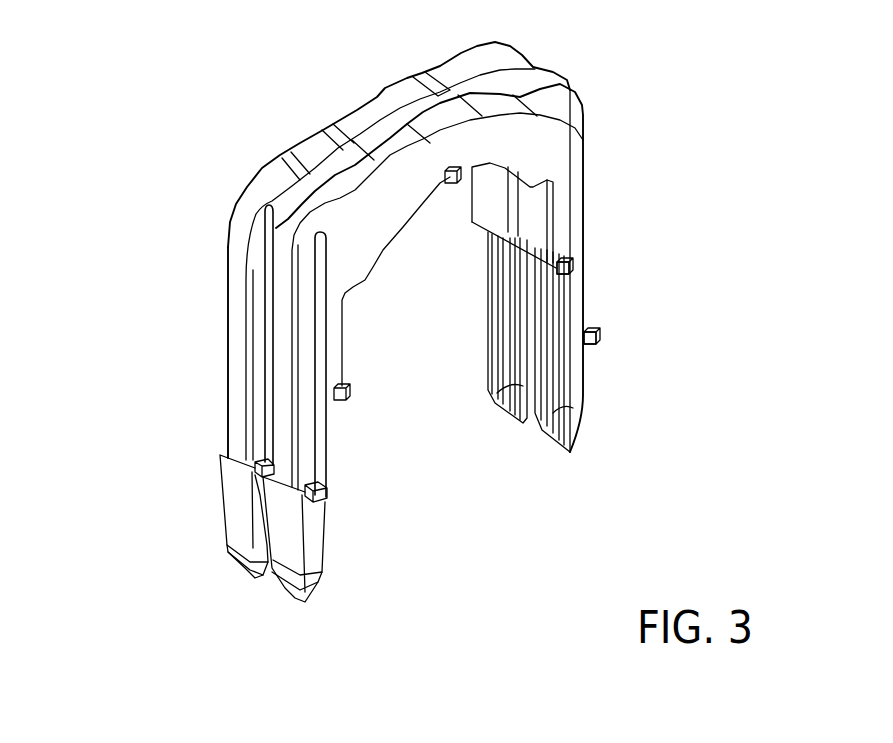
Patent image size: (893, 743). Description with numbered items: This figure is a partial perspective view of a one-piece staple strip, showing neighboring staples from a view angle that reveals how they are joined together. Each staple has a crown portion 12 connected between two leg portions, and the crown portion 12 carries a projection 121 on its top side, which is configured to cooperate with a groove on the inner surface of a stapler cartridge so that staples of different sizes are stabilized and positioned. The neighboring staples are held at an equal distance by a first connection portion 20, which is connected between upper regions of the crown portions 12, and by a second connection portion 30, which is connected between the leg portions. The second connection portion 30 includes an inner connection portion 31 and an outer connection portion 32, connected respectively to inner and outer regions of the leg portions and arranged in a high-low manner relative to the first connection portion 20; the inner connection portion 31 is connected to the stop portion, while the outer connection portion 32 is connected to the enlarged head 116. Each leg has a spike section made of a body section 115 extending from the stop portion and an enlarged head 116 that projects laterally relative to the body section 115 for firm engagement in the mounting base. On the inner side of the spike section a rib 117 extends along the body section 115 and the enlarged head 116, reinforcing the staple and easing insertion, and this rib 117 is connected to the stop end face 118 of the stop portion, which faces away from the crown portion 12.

The crown portion 12 is at (390, 54).
The projection 121 is at (370, 110).
The first connection portion 20 is at (458, 172).
The second connection portion 30 is at (714, 270).
The inner connection portion 31 is at (572, 268).
The outer connection portion 32 is at (600, 340).
The body section 115 is at (236, 403).
The enlarged head 116 is at (236, 487).
The rib 117 is at (545, 437).
The stop end face 118 is at (487, 170).